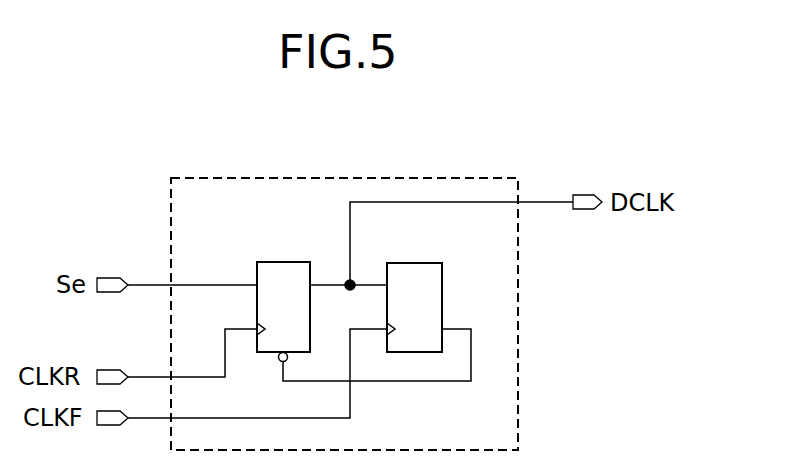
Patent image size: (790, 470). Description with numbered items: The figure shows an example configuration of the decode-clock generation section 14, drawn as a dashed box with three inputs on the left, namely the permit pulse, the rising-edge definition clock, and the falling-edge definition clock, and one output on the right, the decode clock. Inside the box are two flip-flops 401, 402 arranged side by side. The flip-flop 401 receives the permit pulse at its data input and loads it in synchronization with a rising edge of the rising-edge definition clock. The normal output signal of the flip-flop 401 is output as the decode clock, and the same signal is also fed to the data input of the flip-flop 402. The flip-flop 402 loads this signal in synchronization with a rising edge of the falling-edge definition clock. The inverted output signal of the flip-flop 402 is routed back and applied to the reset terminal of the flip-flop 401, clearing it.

The decode-clock generation section 14 is at (340, 177).
The flip-flop 401 is at (280, 262).
The flip-flop 402 is at (417, 263).